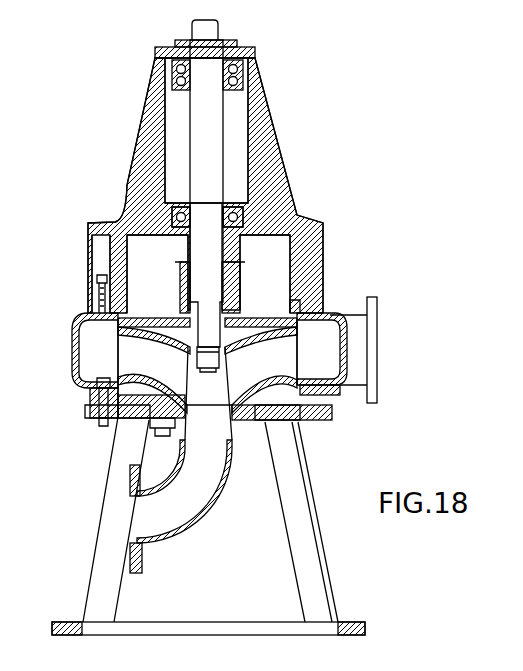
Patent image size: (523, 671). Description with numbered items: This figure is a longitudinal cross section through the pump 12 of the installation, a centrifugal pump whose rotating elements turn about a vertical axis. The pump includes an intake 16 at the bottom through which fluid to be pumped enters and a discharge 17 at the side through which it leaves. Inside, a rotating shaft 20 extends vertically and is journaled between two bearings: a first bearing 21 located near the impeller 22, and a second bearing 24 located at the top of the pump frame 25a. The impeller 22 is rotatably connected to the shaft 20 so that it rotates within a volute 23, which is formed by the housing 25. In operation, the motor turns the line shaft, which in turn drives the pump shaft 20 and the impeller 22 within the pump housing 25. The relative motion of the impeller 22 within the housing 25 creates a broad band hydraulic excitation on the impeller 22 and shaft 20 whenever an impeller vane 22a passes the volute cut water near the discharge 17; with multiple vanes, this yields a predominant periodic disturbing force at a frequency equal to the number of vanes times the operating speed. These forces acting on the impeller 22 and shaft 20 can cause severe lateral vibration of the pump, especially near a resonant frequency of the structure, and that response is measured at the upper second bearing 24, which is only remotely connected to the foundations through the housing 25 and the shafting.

The pump 12 is at (348, 296).
The intake 16 is at (137, 520).
The discharge 17 is at (378, 348).
The rotating shaft 20 is at (225, 251).
The first bearing 21 is at (244, 216).
The impeller 22 is at (158, 327).
The impeller vane 22a is at (336, 388).
The volute 23 is at (93, 361).
The second bearing 24 is at (248, 73).
The housing 25 is at (72, 350).
The pump frame 25a is at (278, 148).